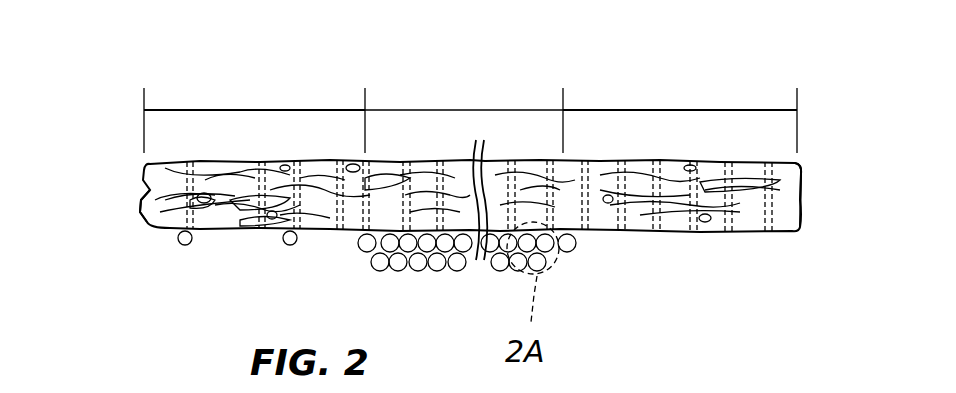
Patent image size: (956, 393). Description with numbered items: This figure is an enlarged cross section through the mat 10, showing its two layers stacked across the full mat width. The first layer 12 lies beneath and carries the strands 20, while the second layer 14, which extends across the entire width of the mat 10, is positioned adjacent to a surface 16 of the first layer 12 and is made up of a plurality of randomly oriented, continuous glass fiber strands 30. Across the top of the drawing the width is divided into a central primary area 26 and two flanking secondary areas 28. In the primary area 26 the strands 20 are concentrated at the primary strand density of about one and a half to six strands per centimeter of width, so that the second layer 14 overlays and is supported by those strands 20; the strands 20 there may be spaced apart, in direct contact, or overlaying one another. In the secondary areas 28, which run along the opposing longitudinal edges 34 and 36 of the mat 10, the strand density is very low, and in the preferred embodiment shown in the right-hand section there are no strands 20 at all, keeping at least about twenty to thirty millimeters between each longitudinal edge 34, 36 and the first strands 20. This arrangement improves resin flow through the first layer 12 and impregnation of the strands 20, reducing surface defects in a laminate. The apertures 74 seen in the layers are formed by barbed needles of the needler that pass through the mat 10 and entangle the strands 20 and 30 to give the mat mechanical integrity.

The mat 10 is at (135, 310).
The first layer 12 is at (818, 230).
The second layer 14 is at (818, 163).
The surface 16 is at (350, 229).
The strands 20 is at (188, 246).
The primary area 26 is at (478, 109).
The secondary areas 28 is at (240, 109).
The glass fiber strands 30 is at (165, 200).
The longitudinal edge 34 is at (136, 213).
The longitudinal edge 36 is at (796, 168).
The apertures 74 is at (212, 178).